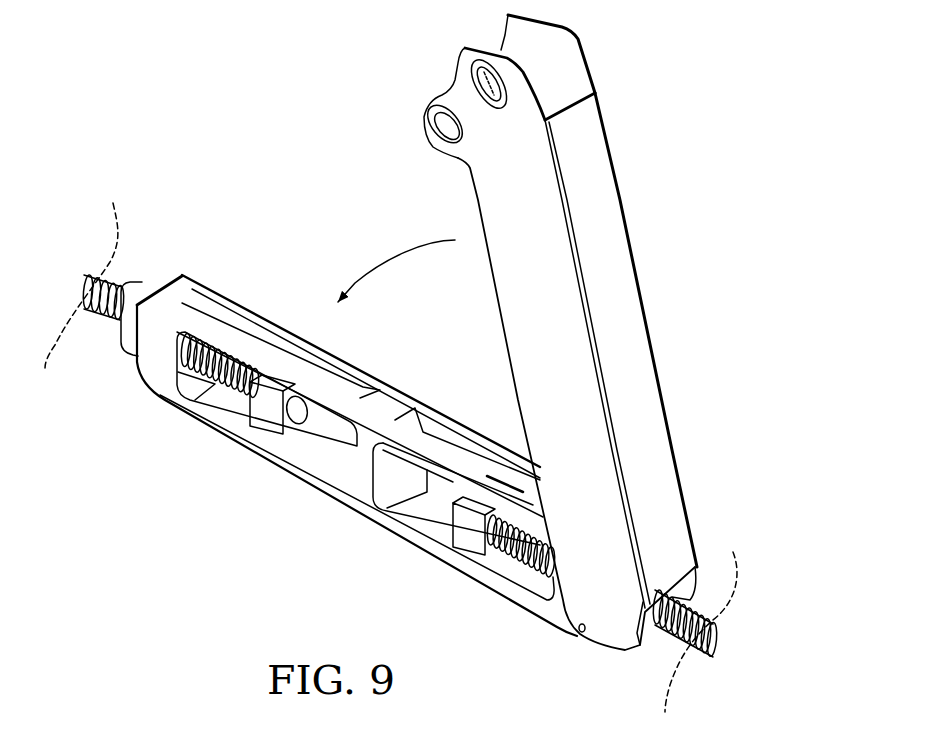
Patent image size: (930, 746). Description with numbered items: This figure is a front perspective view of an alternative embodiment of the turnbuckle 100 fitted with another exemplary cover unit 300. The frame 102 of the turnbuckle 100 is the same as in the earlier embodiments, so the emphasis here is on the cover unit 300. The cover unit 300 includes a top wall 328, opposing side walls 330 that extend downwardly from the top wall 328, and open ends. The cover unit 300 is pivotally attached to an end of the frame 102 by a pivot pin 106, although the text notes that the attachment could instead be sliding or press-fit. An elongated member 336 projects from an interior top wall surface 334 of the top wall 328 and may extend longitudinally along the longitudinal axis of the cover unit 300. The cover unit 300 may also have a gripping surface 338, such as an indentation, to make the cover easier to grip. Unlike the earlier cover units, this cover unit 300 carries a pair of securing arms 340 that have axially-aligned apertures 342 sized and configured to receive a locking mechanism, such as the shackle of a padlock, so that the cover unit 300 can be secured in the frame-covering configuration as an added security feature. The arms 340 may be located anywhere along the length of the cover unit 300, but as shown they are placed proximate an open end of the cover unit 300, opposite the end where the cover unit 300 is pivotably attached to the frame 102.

The turnbuckle 100 is at (233, 540).
The frame 102 is at (178, 438).
The pivot pin 106 is at (578, 634).
The cover unit 300 is at (703, 273).
The top wall 328 is at (658, 505).
The side walls 330 is at (546, 60).
The interior top wall surface 334 is at (583, 95).
The elongated member 336 is at (580, 104).
The gripping surface 338 is at (487, 98).
The securing arms 340 is at (388, 180).
The apertures 342 is at (436, 136).